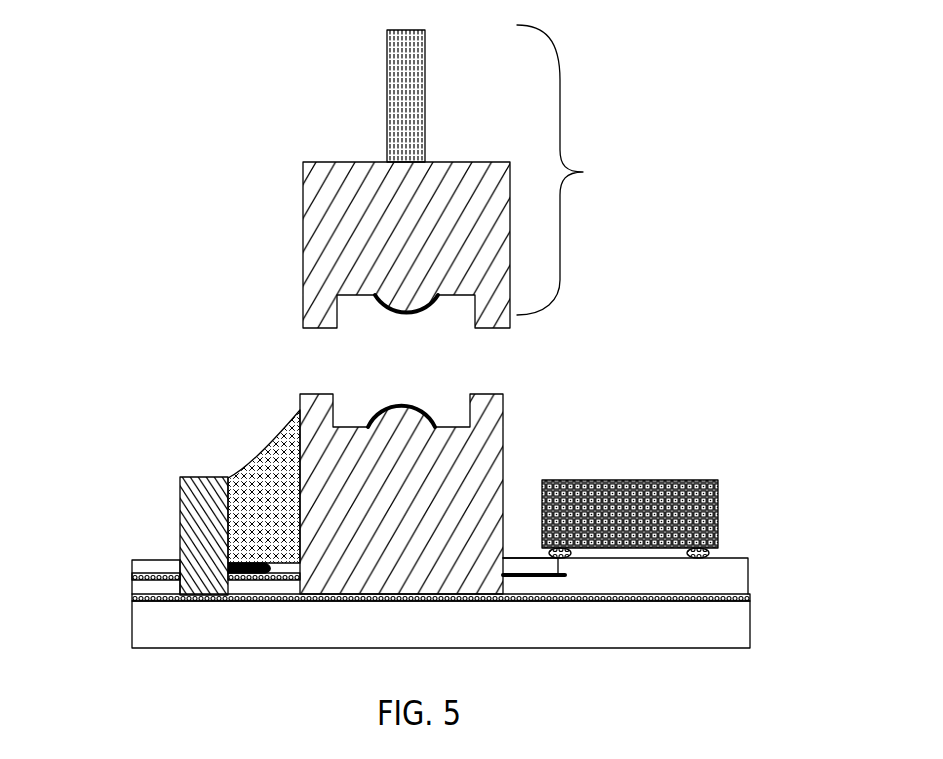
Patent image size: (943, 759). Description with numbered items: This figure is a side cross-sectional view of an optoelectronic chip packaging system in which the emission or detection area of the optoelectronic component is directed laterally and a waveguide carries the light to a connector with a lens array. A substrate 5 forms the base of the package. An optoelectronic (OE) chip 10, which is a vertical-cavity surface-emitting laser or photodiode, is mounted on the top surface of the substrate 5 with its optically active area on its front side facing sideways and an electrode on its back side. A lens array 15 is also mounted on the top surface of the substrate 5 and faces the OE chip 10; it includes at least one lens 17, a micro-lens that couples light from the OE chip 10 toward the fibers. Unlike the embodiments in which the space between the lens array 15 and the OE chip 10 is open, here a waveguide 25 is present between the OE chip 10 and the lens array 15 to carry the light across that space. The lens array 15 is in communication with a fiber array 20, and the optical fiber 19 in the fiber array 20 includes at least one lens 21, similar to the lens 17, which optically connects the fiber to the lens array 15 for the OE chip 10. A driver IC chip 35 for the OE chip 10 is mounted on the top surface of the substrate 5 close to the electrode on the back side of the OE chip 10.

The substrate 5 is at (728, 627).
The optoelectronic (OE) chip 10 is at (192, 512).
The lens array 15 is at (323, 450).
The lens 17 is at (399, 412).
The optical fiber 19 is at (402, 125).
The fiber array 20 is at (583, 172).
The lens 21 is at (410, 306).
The waveguide 25 is at (322, 275).
The driver IC chip 35 is at (658, 480).